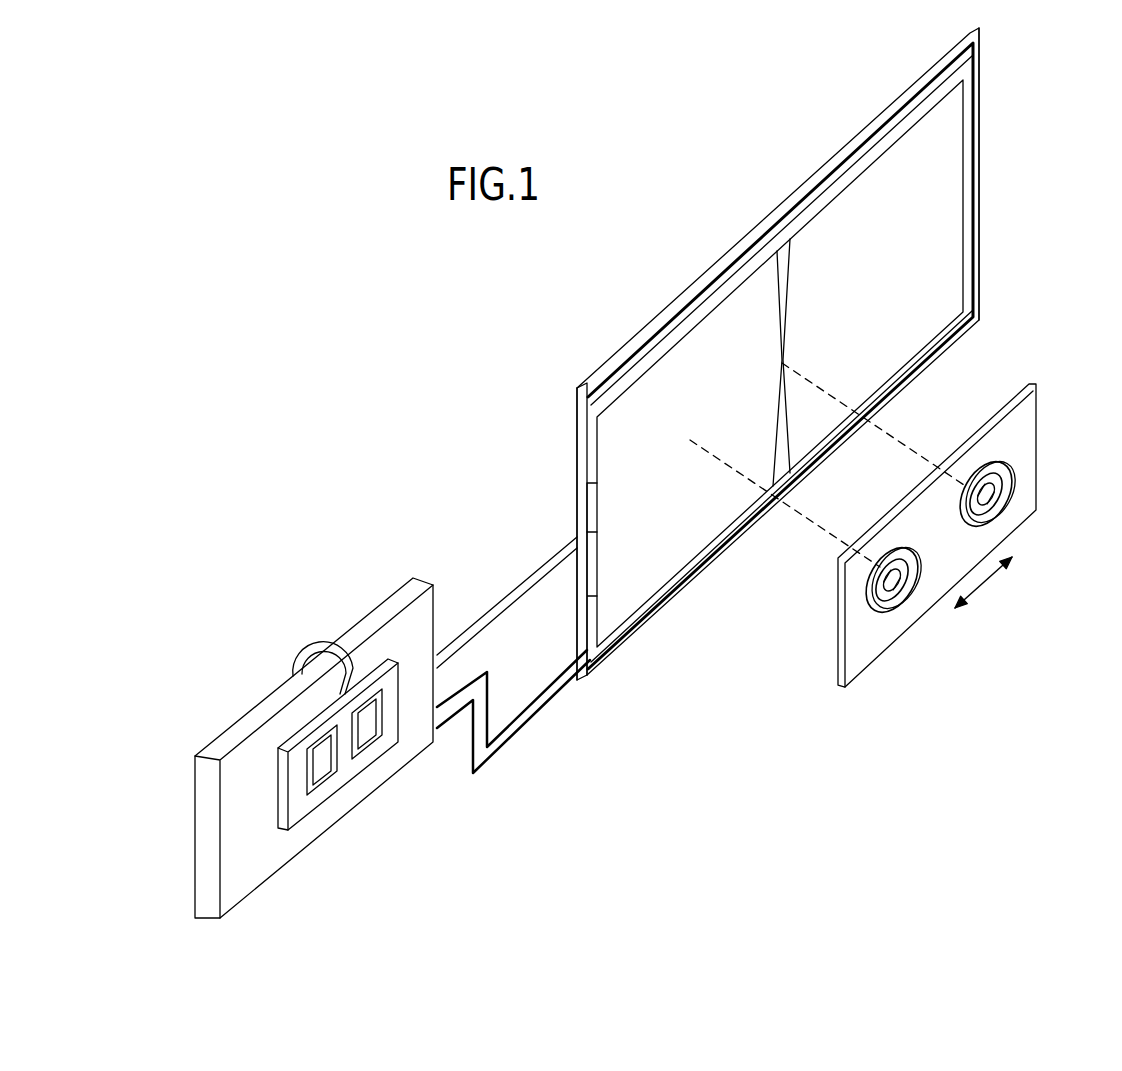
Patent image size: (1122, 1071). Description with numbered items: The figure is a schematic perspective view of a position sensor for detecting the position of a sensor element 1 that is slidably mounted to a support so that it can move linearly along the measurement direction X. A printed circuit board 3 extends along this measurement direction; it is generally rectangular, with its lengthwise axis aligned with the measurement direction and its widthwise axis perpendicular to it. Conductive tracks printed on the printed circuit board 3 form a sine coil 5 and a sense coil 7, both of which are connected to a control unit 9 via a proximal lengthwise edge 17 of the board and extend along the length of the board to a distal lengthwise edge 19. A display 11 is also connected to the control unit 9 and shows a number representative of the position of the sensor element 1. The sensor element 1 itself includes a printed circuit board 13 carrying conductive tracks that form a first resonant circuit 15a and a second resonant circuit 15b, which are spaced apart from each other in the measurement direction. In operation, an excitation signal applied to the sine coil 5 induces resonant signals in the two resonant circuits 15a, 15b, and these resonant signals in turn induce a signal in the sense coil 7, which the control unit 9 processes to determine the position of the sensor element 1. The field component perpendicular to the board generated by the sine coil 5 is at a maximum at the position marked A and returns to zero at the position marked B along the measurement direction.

The sensor element 1 is at (825, 691).
The printed circuit board 3 is at (835, 155).
The sine coil 5 is at (594, 483).
The sense coil 7 is at (588, 597).
The control unit 9 is at (237, 728).
The display 11 is at (353, 778).
The printed circuit board 13 is at (1036, 430).
The first resonant circuit 15a is at (905, 592).
The second resonant circuit 15b is at (1002, 498).
The proximal lengthwise edge 17 is at (577, 403).
The distal lengthwise edge 19 is at (982, 120).